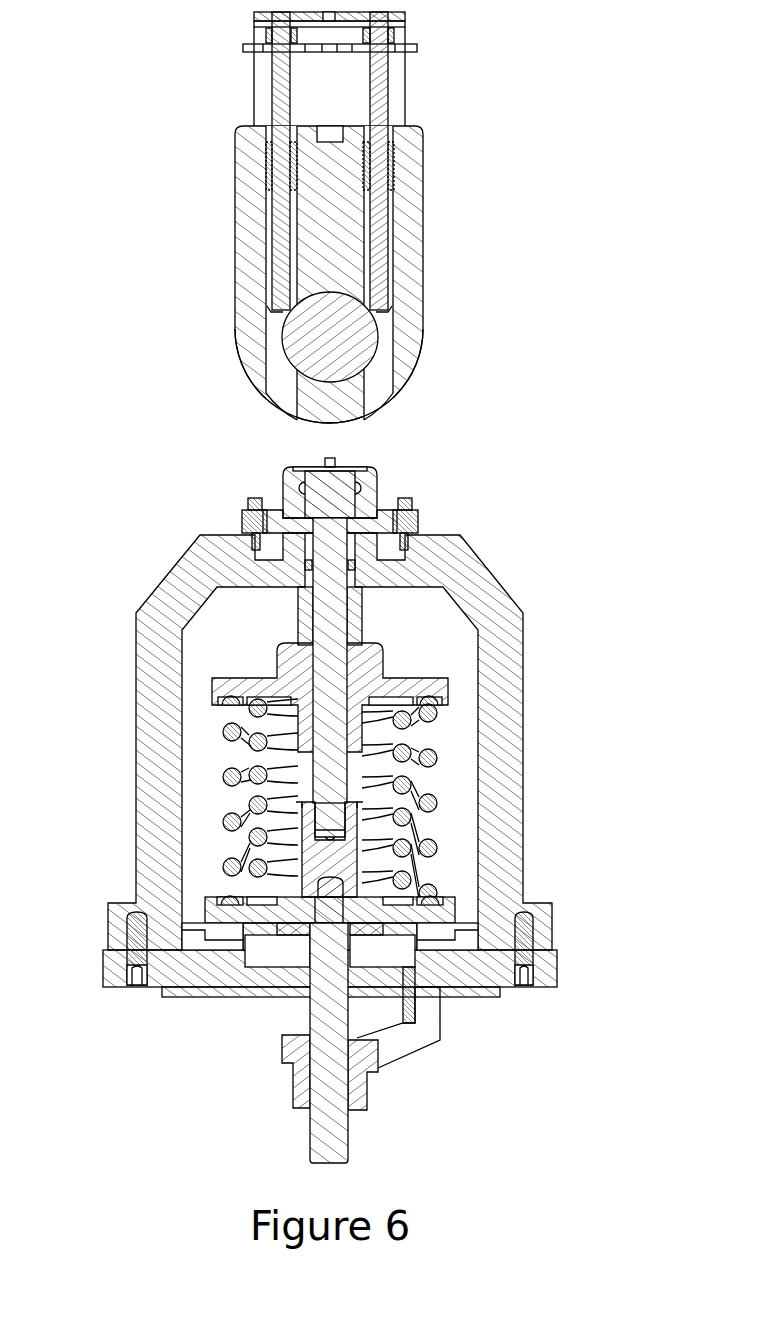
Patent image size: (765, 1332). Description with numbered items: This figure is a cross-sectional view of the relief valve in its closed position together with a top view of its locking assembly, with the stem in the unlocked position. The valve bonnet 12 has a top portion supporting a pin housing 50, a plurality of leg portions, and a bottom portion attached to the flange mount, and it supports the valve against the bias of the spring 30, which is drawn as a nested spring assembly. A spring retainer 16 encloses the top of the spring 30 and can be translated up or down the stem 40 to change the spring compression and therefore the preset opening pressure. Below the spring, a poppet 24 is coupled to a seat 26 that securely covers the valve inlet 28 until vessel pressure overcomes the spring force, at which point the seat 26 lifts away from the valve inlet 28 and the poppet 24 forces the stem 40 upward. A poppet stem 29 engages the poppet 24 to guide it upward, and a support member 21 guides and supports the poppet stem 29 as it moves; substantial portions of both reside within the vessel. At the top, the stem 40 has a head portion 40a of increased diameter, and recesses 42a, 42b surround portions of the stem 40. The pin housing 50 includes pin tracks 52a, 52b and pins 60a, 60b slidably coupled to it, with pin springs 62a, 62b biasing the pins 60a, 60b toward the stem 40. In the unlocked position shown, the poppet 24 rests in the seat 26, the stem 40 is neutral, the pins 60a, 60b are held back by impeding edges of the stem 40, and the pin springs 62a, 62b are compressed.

The valve bonnet 12 is at (478, 582).
The spring retainer 16 is at (372, 660).
The support member 21 is at (410, 1043).
The poppet 24 is at (215, 910).
The seat 26 is at (277, 935).
The valve inlet 28 is at (386, 950).
The poppet stem 29 is at (338, 1132).
The spring 30 is at (448, 800).
The stem 40 is at (330, 608).
The head portion 40a is at (338, 343).
The recess 42a is at (352, 526).
The recess 42b is at (308, 524).
The pin housing 50 is at (250, 335).
The pin track 52a is at (378, 380).
The pin track 52b is at (277, 383).
The pin 60a is at (378, 253).
The pin 60b is at (282, 253).
The pin spring 62a is at (378, 165).
The pin spring 62b is at (282, 165).